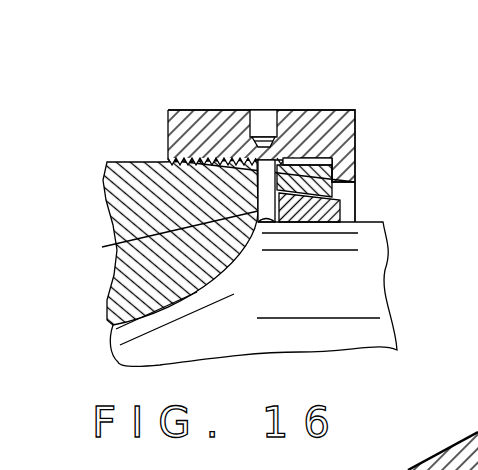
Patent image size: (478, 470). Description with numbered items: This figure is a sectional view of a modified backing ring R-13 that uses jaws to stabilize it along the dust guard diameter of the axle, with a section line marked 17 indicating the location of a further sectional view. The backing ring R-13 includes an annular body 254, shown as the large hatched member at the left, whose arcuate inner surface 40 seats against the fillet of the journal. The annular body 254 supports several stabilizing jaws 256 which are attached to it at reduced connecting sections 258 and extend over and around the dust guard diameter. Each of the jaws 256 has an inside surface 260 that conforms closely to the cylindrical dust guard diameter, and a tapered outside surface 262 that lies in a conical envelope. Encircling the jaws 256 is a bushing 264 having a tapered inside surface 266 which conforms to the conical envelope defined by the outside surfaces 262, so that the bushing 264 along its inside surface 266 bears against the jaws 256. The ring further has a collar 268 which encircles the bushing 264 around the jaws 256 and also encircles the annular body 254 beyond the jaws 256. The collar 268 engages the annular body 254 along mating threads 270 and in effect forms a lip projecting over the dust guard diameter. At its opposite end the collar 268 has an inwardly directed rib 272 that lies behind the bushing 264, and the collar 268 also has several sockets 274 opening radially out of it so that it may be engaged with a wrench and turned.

The backing ring R-13 is at (137, 108).
The annular body 254 is at (124, 205).
The reduced connecting sections 258 is at (161, 234).
The bushing 264 is at (355, 112).
The collar 268 is at (330, 118).
The sockets 274 is at (258, 122).
The mating threads 270 is at (213, 160).
The inwardly directed rib 272 is at (350, 172).
The tapered outside surfaces 262 is at (355, 150).
The stabilizing jaws 256 is at (340, 210).
The tapered inside surface 266 is at (318, 224).
The inside surfaces 260 is at (383, 256).
The arcuate inner surface 40 is at (197, 292).
The section line 17 is at (303, 80).